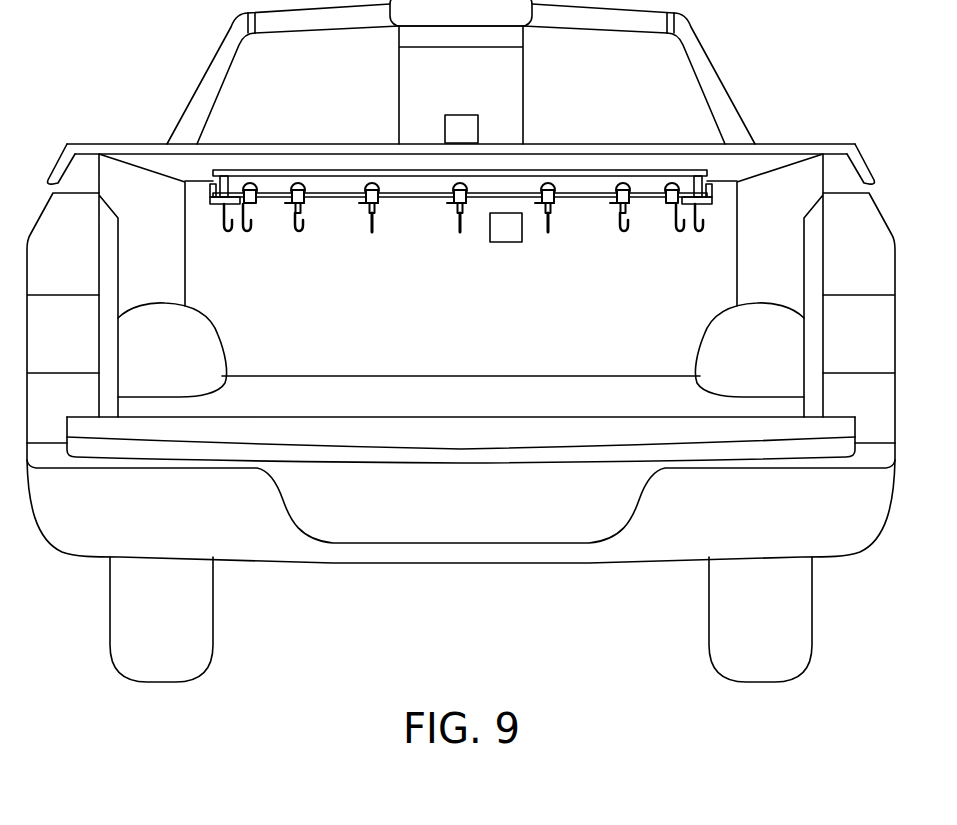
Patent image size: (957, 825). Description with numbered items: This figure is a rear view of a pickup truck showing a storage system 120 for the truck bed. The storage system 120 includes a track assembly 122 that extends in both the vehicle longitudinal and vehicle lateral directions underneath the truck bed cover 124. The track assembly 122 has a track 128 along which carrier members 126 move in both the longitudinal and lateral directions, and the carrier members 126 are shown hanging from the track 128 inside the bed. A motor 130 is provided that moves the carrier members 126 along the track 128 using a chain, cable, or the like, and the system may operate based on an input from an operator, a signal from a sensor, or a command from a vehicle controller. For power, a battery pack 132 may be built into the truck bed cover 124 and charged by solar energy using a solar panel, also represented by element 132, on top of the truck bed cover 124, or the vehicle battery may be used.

The storage system 120 is at (461, 341).
The track assembly 122 is at (460, 253).
The truck bed cover 124 is at (461, 111).
The carrier member 126 is at (550, 233).
The track 128 is at (461, 134).
The motor 130 is at (503, 242).
The battery pack 132 is at (457, 115).